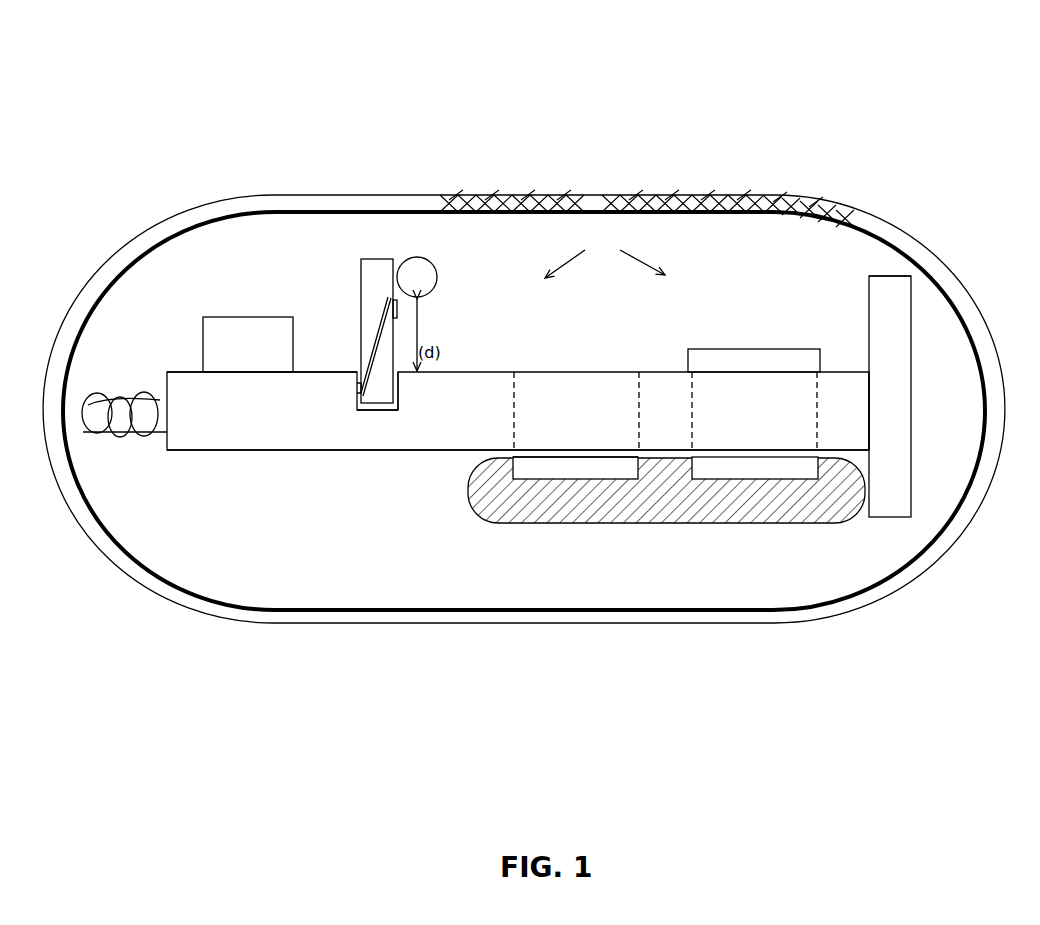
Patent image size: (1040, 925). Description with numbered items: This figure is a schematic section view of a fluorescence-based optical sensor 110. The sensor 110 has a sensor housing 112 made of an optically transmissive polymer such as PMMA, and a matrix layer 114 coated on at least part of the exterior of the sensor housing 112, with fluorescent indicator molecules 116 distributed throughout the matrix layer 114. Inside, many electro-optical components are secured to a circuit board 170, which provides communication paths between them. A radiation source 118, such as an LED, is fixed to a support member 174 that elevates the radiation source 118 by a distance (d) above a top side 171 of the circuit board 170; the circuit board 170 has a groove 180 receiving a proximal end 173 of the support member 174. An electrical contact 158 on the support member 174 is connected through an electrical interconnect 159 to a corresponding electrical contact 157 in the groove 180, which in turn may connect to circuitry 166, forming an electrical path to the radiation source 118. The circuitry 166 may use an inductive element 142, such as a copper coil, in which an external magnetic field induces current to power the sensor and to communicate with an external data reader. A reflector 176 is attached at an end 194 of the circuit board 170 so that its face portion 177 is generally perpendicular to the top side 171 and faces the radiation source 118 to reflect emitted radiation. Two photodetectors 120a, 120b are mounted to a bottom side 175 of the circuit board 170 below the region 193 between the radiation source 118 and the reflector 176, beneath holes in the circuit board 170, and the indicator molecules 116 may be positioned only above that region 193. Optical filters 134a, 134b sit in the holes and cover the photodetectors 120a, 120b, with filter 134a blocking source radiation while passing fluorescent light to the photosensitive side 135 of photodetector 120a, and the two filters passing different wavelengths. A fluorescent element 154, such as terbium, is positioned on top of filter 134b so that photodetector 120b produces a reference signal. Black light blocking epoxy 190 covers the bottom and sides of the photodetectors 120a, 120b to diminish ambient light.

The sensor 110 is at (238, 70).
The sensor housing 112 is at (187, 232).
The matrix layer 114 is at (383, 205).
The fluorescent indicator molecules 116 is at (572, 202).
The radiation source 118 is at (410, 258).
The photodetector 120a is at (600, 478).
The photodetector 120b is at (800, 478).
The optical filter 134a is at (570, 376).
The optical filter 134b is at (695, 412).
The photosensitive side 135 is at (550, 462).
The inductive element 142 is at (127, 450).
The fluorescent element 154 is at (800, 348).
The electrical contact 157 is at (358, 387).
The electrical contact 158 is at (398, 310).
The electrical interconnect 159 is at (378, 338).
The circuitry 166 is at (239, 318).
The circuit board 170 is at (262, 440).
The top side 171 is at (181, 370).
The proximal end 173 is at (388, 394).
The support member 174 is at (368, 295).
The bottom side 175 is at (410, 455).
The reflector 176 is at (903, 323).
The face portion 177 is at (870, 302).
The groove 180 is at (358, 411).
The black light blocking epoxy 190 is at (742, 520).
The region 193 is at (605, 252).
The end 194 is at (855, 398).